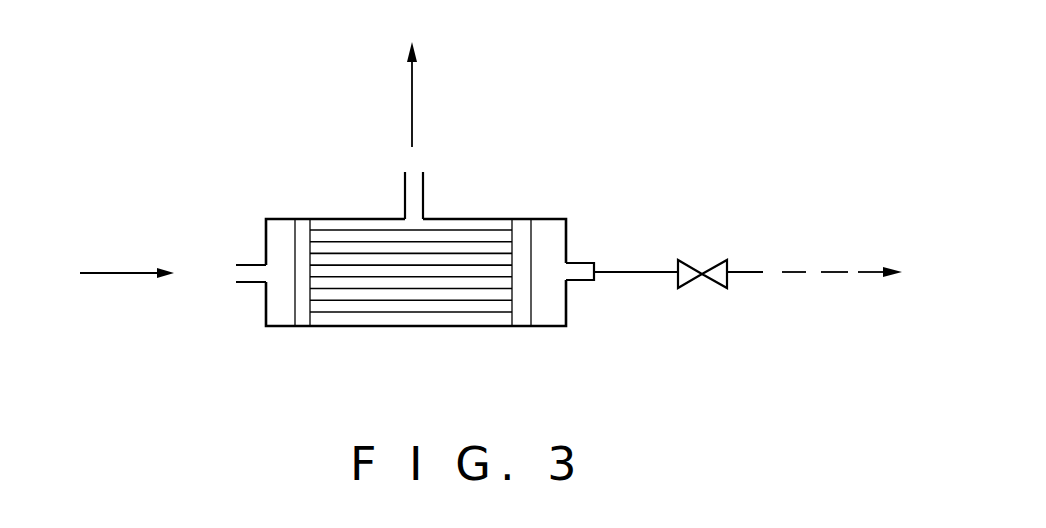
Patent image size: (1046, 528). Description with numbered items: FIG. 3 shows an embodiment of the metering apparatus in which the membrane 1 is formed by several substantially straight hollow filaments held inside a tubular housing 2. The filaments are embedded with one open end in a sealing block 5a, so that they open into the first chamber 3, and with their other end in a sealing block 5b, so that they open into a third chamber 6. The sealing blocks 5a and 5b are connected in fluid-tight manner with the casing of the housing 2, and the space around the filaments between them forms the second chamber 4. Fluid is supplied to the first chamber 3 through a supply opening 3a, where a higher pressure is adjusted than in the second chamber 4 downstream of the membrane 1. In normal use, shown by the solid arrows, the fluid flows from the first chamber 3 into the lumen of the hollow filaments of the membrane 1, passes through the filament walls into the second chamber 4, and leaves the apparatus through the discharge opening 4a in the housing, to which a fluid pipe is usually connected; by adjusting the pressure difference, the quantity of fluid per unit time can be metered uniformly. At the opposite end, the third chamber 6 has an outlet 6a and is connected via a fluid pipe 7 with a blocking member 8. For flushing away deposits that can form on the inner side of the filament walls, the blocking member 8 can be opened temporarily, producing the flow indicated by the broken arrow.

The membrane 1 is at (465, 313).
The tubular housing 2 is at (352, 220).
The first chamber 3 is at (278, 307).
The supply opening 3a is at (255, 272).
The second chamber 4 is at (468, 226).
The discharge opening 4a is at (413, 185).
The sealing block 5a is at (301, 232).
The sealing block 5b is at (523, 238).
The third chamber 6 is at (552, 247).
The outlet pipe 6a is at (573, 275).
The fluid pipe 7 is at (622, 273).
The blocking member 8 is at (686, 262).